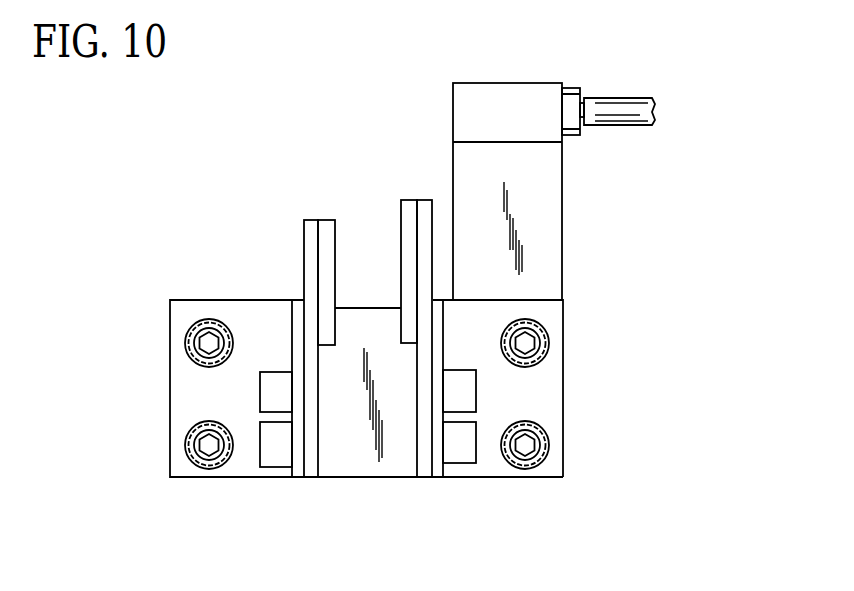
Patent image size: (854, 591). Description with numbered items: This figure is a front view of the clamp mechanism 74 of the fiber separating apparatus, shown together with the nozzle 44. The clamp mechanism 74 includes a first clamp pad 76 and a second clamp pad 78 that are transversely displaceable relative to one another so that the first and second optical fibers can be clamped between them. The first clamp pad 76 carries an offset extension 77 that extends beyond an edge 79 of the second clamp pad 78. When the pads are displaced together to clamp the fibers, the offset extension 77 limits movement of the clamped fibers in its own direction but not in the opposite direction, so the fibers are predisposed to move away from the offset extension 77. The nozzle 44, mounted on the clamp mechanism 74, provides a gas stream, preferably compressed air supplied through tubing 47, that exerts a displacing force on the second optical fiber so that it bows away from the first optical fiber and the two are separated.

The clamp mechanism 74 is at (244, 211).
The first clamp pad 76 is at (408, 213).
The offset extension 77 is at (399, 222).
The second clamp pad 78 is at (327, 222).
The edge 79 is at (337, 240).
The nozzle 44 is at (527, 83).
The tubing 47 is at (622, 125).